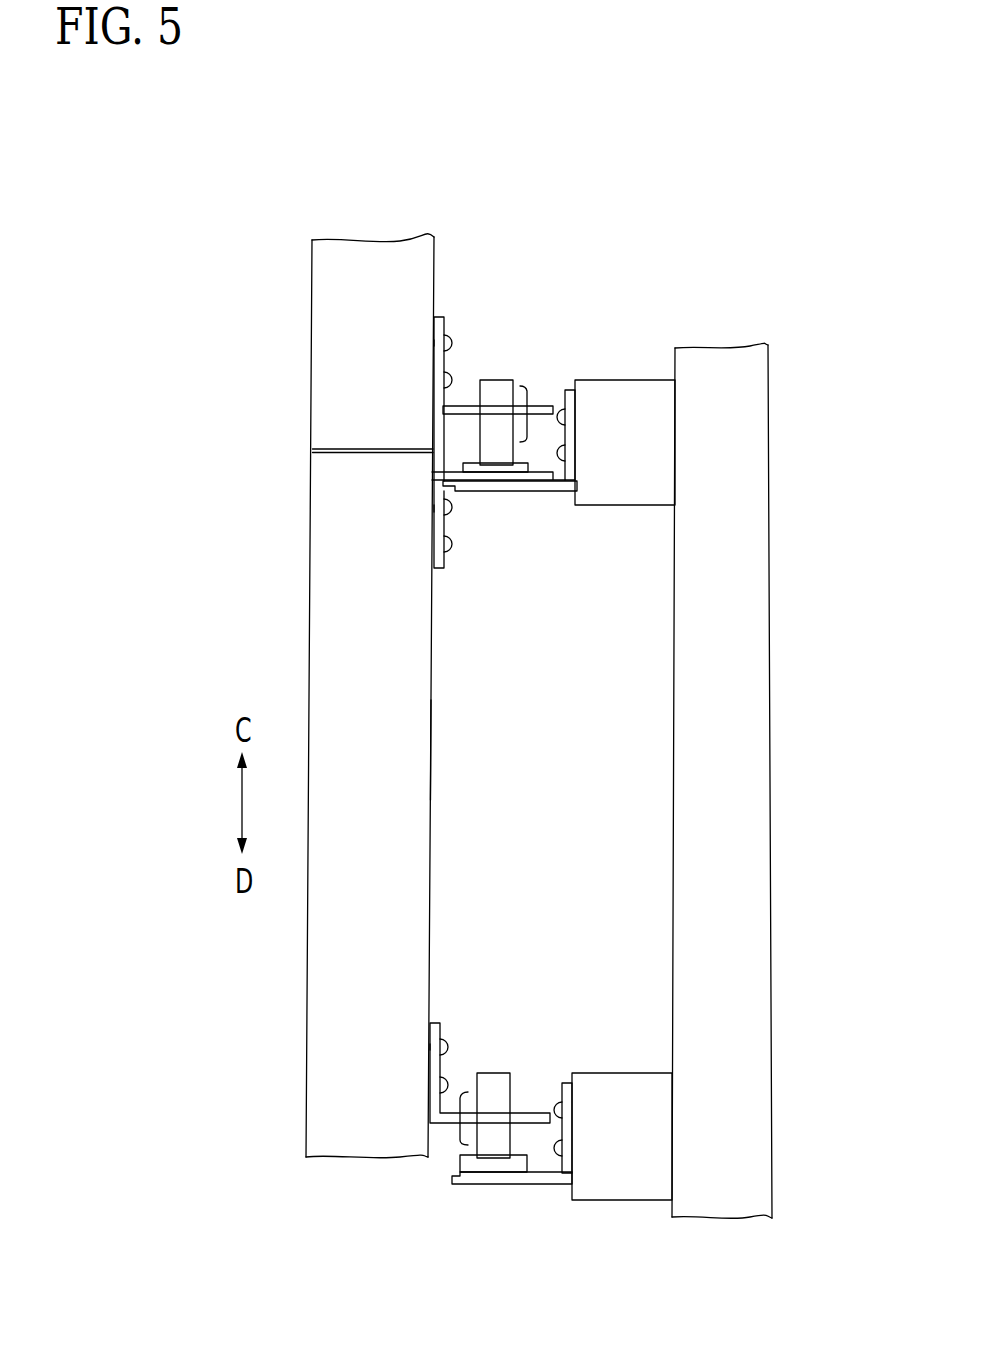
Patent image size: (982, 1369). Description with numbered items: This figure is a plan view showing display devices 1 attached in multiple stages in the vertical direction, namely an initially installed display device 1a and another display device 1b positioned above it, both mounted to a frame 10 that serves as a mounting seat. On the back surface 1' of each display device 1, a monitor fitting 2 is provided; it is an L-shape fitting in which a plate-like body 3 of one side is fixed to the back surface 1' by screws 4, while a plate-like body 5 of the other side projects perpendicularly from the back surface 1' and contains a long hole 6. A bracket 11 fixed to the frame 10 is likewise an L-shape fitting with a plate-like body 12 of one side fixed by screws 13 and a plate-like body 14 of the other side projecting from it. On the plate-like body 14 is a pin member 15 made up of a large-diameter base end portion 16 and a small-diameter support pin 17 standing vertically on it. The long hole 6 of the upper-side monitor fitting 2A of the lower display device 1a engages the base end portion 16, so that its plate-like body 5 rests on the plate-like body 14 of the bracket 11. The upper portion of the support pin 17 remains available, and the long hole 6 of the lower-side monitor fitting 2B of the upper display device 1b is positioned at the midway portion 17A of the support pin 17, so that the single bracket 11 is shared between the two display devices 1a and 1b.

The display device 1 is at (338, 696).
The display device initially installed 1a is at (323, 568).
The another display device 1b is at (326, 290).
The back surface 1' is at (462, 750).
The monitor fitting 2 is at (506, 720).
The upper-side monitor fitting 2A is at (582, 626).
The lower-side monitor fitting 2B is at (540, 967).
The plate-like body 3 is at (434, 356).
The screw 4 is at (451, 380).
The plate-like body 5 is at (544, 412).
The long hole 6 is at (502, 405).
The frame 10 is at (745, 765).
The bracket 11 is at (567, 804).
The plate-like body 12 is at (572, 405).
The screw 13 is at (565, 418).
The plate-like body 14 is at (518, 491).
The pin member 15 is at (422, 775).
The base end portion 16 is at (490, 467).
The support pin 17 is at (480, 407).
The midway portion 17A is at (544, 412).